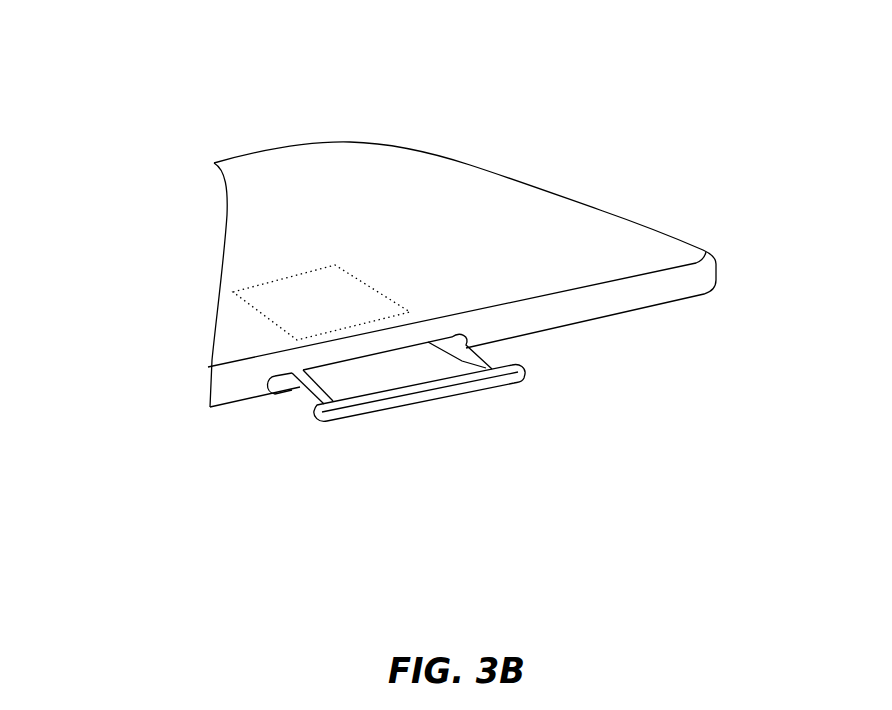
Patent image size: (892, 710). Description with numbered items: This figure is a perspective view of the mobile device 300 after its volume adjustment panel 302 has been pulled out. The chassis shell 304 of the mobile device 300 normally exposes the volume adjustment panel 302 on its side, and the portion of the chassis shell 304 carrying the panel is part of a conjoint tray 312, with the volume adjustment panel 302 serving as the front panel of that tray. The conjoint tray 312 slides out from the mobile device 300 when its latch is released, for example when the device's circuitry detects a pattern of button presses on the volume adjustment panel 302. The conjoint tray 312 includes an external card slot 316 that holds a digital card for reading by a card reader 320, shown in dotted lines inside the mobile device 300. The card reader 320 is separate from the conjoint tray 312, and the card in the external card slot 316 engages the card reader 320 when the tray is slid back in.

The mobile device 300 is at (112, 70).
The volume adjustment panel 302 is at (453, 315).
The chassis shell 304 is at (659, 293).
The conjoint tray 312 is at (310, 396).
The external card slot 316 is at (415, 360).
The card reader 320 is at (343, 273).